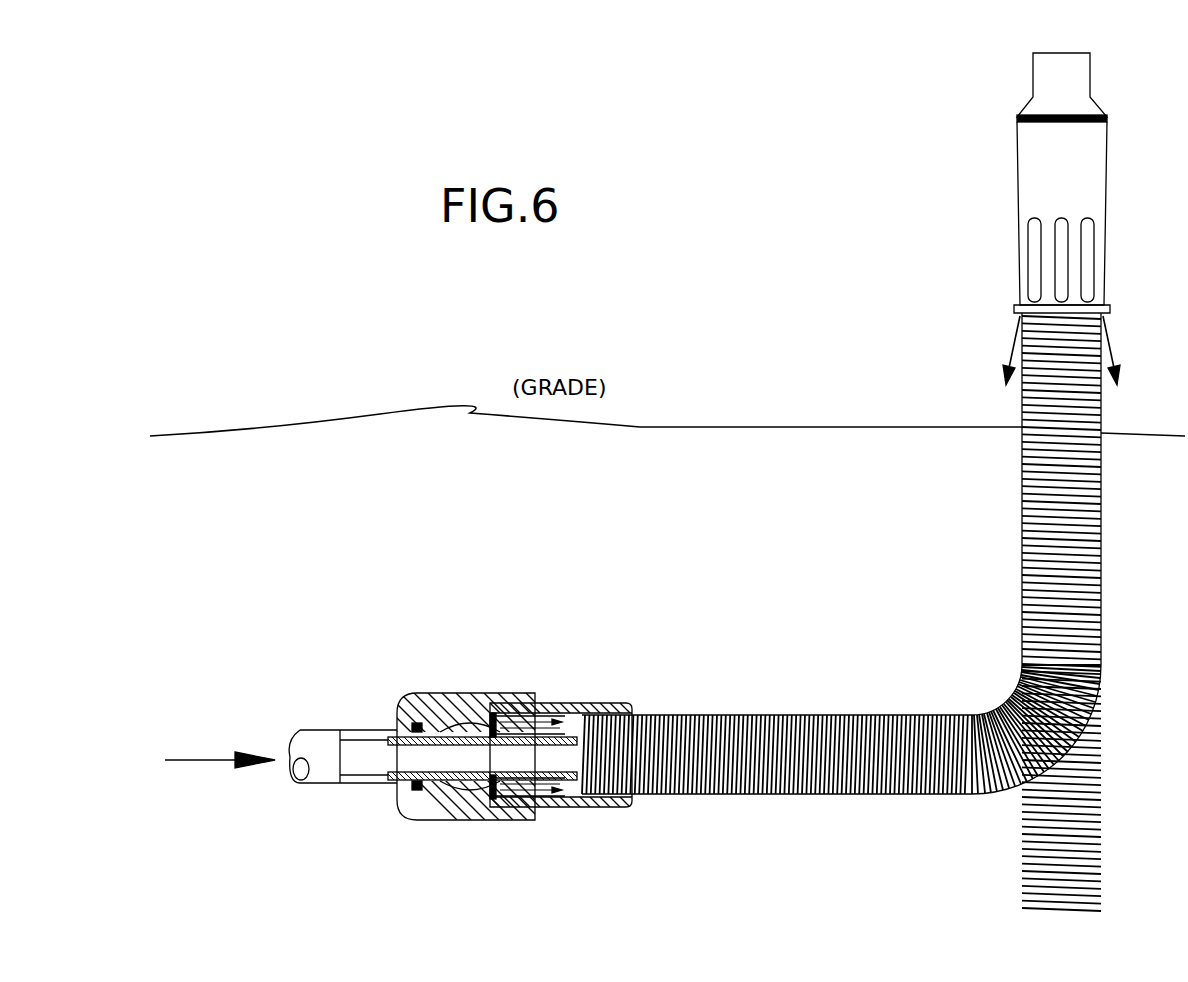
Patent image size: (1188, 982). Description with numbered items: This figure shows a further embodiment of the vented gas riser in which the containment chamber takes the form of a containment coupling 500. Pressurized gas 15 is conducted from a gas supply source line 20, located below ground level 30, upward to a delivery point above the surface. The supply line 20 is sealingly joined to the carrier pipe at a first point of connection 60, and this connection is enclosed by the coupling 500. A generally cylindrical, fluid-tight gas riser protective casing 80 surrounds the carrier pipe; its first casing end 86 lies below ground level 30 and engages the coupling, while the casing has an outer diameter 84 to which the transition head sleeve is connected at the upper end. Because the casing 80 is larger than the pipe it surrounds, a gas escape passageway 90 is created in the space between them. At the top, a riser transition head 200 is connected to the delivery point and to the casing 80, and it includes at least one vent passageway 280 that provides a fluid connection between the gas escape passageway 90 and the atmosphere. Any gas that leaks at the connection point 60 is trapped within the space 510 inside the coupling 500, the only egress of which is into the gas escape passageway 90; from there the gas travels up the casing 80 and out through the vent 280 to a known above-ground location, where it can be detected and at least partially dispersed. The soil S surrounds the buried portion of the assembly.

The pressurized gas 15 is at (205, 752).
The gas supply source line 20 is at (313, 737).
The ground level 30 is at (378, 420).
The soil S is at (878, 339).
The first point of connection 60 is at (503, 700).
The gas riser protective casing 80 is at (851, 612).
The outer diameter of casing 84 is at (775, 715).
The first casing end 86 is at (618, 742).
The gas escape passageway 90 is at (575, 700).
The riser transition head 200 is at (1035, 163).
The vent passageway 280 is at (1042, 561).
The containment coupling 500 is at (462, 672).
The space inside coupling 510 is at (538, 700).